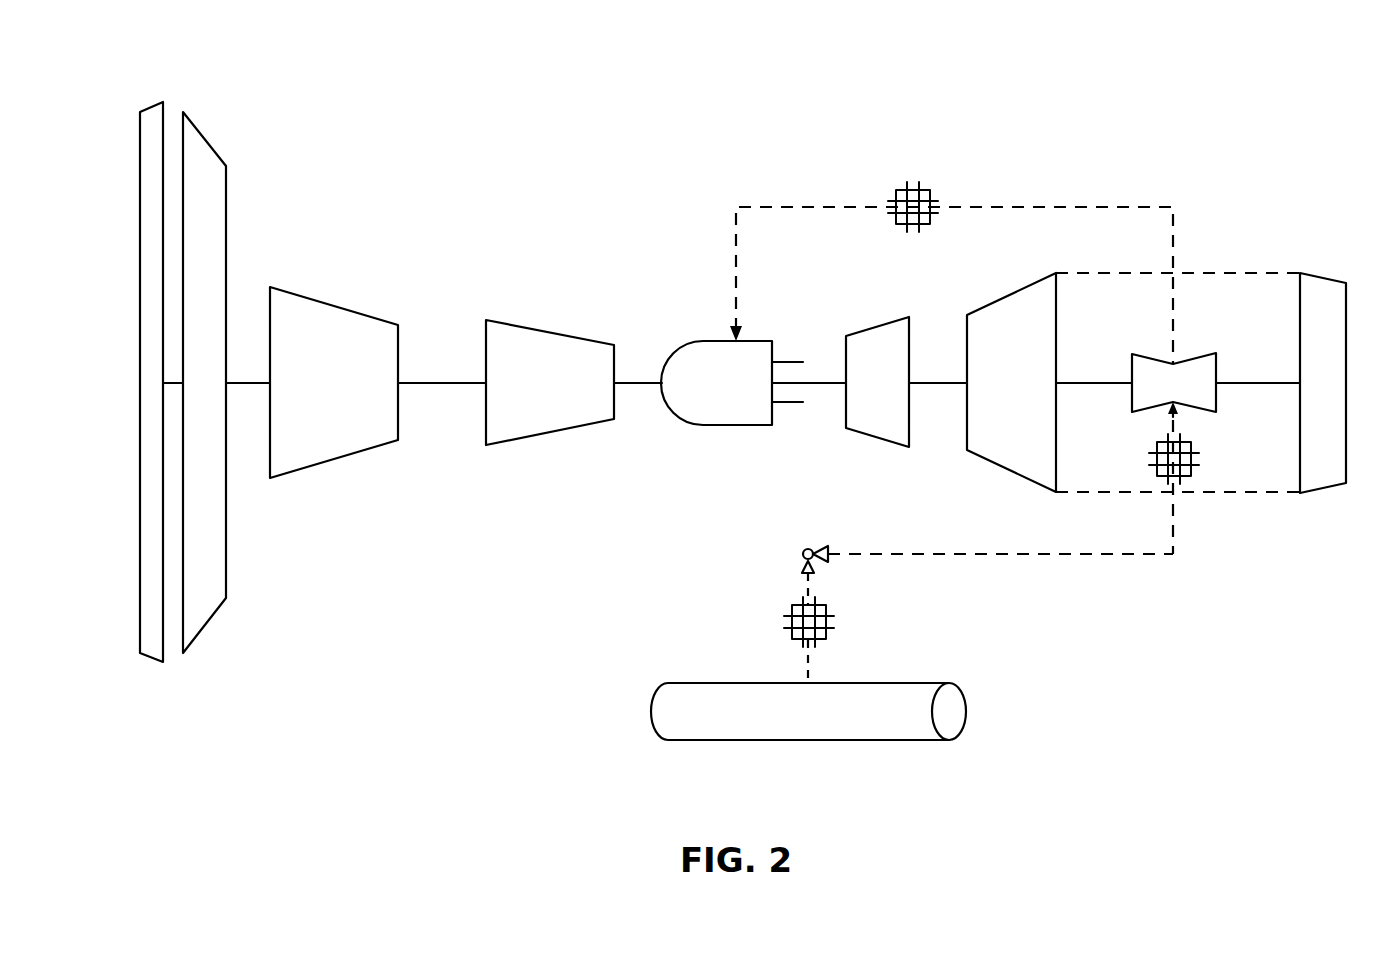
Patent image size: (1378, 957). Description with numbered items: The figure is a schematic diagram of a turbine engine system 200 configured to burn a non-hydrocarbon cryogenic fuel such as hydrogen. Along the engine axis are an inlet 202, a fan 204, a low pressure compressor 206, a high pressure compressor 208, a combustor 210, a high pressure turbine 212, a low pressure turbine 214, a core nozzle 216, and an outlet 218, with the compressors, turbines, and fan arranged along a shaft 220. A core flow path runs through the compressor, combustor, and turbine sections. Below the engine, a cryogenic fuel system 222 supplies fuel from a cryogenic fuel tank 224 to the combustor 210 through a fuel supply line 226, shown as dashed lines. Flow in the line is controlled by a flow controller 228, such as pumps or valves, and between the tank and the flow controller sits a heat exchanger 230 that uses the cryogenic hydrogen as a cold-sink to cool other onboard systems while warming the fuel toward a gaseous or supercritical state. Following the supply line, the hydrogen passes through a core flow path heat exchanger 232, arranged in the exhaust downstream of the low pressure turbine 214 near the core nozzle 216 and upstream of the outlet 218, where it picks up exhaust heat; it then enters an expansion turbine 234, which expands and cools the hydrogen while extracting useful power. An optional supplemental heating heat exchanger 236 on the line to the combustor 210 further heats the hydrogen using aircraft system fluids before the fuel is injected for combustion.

The turbine engine system 200 is at (1249, 98).
The inlet 202 is at (152, 120).
The fan 204 is at (200, 160).
The low pressure compressor 206 is at (318, 312).
The high pressure compressor 208 is at (540, 350).
The combustor 210 is at (743, 362).
The high pressure turbine 212 is at (880, 345).
The low pressure turbine 214 is at (1016, 308).
The core nozzle 216 is at (1277, 493).
The outlet 218 is at (1315, 288).
The shaft 220 is at (423, 380).
The cryogenic fuel system 222 is at (925, 603).
The cryogenic fuel tank 224 is at (888, 725).
The fuel supply line 226 is at (932, 554).
The flow controller 228 is at (803, 556).
The heat exchanger 230 is at (830, 622).
The core flow path heat exchanger 232 is at (1183, 478).
The expansion turbine 234 is at (1188, 355).
The supplemental heating heat exchanger 236 is at (913, 190).